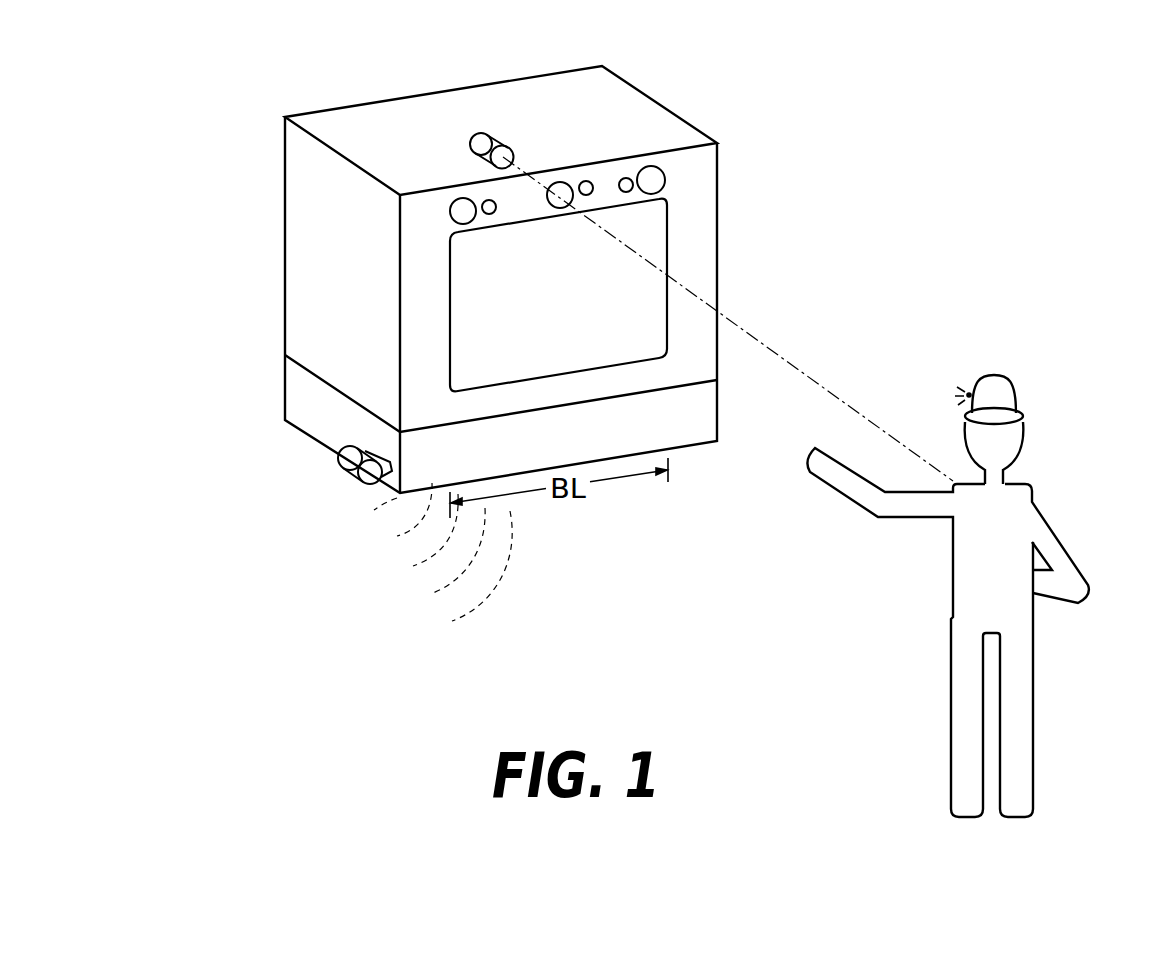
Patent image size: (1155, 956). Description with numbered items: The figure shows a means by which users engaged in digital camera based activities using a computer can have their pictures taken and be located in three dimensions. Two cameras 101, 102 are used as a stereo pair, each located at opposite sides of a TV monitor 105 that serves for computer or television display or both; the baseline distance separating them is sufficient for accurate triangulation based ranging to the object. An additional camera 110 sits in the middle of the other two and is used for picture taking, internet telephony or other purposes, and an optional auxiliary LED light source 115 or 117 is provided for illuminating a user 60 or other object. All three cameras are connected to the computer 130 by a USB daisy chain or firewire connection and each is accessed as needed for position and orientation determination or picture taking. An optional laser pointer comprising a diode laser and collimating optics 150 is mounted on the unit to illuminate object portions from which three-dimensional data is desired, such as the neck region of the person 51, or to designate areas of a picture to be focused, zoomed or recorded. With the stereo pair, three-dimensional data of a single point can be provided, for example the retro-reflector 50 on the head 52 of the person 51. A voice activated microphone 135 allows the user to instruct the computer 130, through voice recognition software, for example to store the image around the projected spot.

The TV monitor 105 is at (732, 288).
The computer 130 is at (700, 428).
The diode laser and collimating optics 150 is at (476, 141).
The additional camera 110 is at (558, 182).
The auxiliary LED light source 115 is at (587, 181).
The auxiliary LED light source 117 is at (630, 191).
The camera 102 is at (665, 182).
The camera 101 is at (450, 212).
The voice activated microphone 135 is at (340, 456).
The user 60 is at (930, 627).
The head 52 is at (1005, 437).
The person 51 is at (1043, 498).
The retro-reflector 50 is at (967, 392).